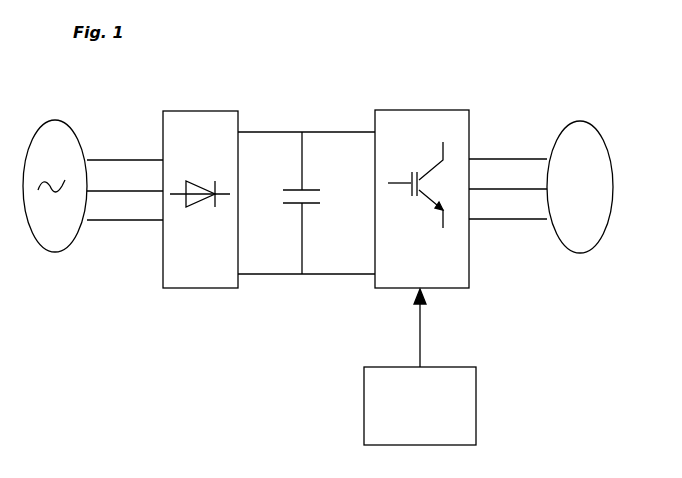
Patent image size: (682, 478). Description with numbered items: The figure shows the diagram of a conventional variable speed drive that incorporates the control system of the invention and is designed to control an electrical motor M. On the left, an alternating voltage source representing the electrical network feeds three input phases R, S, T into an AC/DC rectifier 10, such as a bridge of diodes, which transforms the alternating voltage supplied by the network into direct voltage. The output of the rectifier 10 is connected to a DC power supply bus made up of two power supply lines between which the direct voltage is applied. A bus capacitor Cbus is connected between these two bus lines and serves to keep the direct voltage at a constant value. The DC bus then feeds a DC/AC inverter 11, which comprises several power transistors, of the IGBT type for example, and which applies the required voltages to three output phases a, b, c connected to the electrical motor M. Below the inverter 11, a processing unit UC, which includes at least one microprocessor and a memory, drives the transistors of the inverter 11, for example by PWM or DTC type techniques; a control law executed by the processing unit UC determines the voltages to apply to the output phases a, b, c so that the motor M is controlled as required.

The AC/DC rectifier 10 is at (195, 111).
The DC/AC inverter 11 is at (412, 110).
The bus capacitor Cbus is at (317, 203).
The processing unit UC is at (420, 367).
The electrical motor M is at (580, 187).
The input phase R is at (125, 152).
The input phase S is at (125, 183).
The input phase T is at (125, 212).
The output phase a is at (508, 151).
The output phase b is at (508, 181).
The output phase c is at (508, 211).